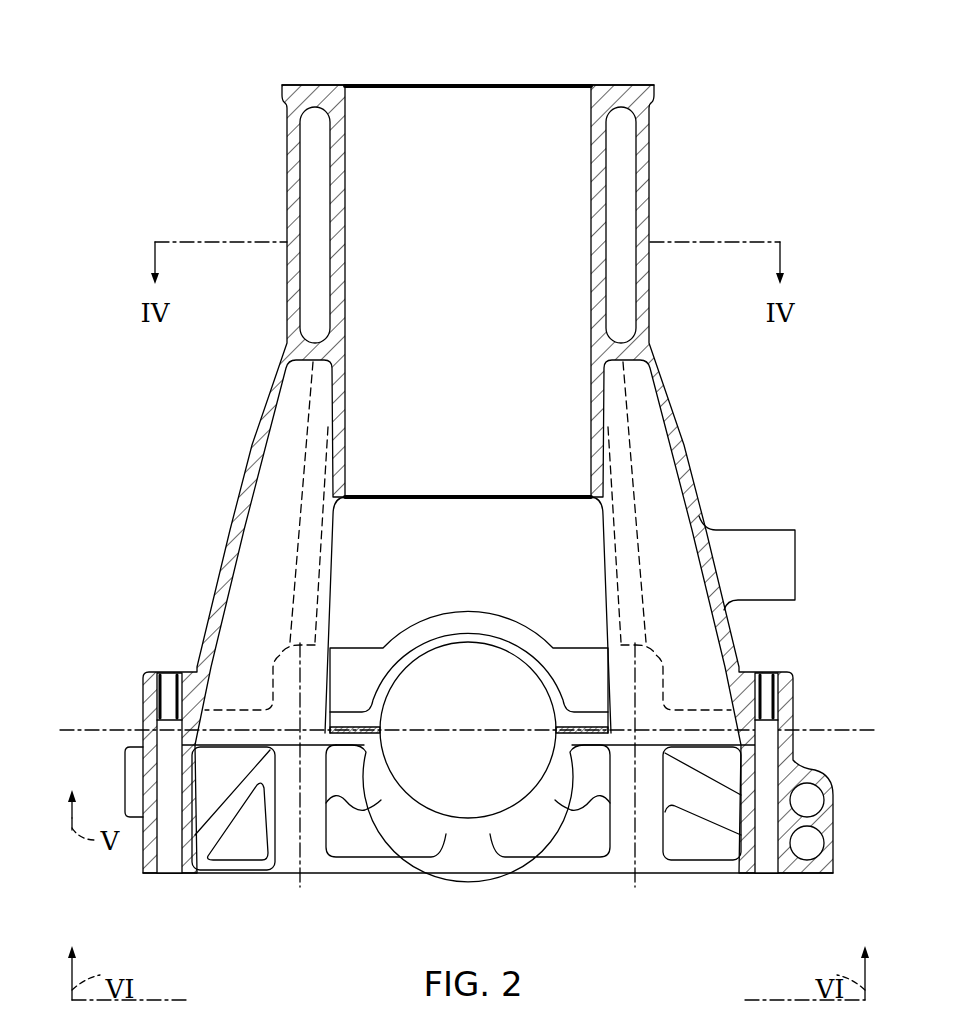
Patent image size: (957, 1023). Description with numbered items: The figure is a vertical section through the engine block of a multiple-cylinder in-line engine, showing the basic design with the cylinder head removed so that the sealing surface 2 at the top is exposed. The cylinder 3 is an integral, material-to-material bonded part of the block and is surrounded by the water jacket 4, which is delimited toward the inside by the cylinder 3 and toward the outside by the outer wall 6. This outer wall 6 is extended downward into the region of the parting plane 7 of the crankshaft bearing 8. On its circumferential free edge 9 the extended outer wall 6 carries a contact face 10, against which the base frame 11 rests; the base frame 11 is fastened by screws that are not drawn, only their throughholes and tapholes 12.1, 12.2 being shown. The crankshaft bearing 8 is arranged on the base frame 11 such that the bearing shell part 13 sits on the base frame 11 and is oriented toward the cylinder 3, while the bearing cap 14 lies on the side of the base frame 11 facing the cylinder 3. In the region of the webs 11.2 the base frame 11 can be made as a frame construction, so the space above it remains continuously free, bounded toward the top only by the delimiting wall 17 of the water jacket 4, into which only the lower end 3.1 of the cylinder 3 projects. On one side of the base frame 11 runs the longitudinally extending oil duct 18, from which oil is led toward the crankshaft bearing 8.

The sealing surface 2 is at (609, 85).
The cylinder 3 is at (531, 50).
The lower end of the cylinder 3.1 is at (380, 497).
The water jacket 4 is at (628, 142).
The outer wall 6 is at (650, 207).
The parting plane 7 is at (67, 728).
The crankshaft bearing 8 is at (500, 785).
The circumferential free edge 9 is at (808, 678).
The contact face 10 is at (680, 727).
The base frame 11 is at (148, 850).
The web 11.2 is at (360, 867).
The throughhole 12.1 is at (306, 840).
The taphole 12.2 is at (170, 860).
The bearing shell part 13 is at (414, 798).
The bearing cap 14 is at (432, 622).
The delimiting wall 17 is at (632, 352).
The longitudinally extending oil duct 18 is at (807, 845).